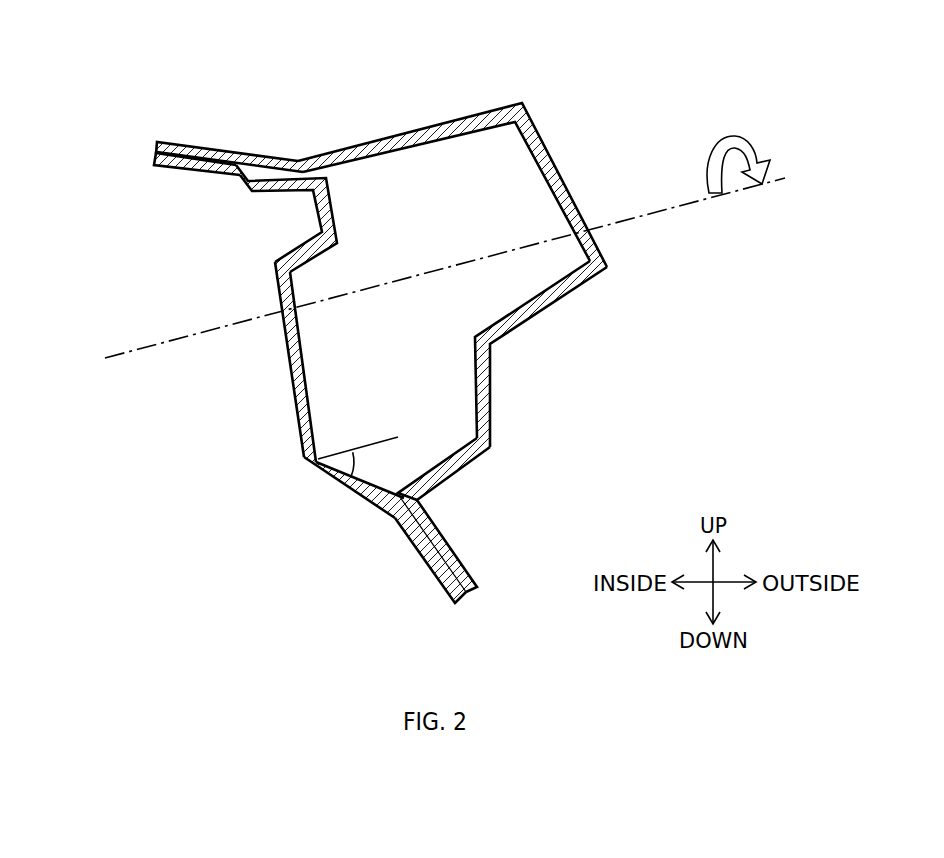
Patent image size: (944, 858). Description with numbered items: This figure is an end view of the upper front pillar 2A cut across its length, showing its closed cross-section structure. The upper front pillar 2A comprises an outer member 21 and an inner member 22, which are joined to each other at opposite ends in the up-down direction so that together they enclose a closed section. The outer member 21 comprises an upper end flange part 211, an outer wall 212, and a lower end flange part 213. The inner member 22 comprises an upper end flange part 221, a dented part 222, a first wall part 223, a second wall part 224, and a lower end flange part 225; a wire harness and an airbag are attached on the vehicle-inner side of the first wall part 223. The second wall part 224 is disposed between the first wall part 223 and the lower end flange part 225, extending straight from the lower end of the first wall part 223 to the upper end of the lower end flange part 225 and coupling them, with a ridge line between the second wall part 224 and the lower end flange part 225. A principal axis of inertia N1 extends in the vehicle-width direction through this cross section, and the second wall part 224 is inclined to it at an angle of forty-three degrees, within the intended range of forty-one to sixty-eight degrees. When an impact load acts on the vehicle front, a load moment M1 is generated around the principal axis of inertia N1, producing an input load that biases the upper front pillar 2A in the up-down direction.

The upper front pillar 2A is at (453, 90).
The outer member 21 is at (552, 139).
The upper end flange part 211 is at (200, 143).
The outer wall 212 is at (608, 266).
The lower end flange part 213 is at (464, 566).
The inner member 22 is at (285, 384).
The upper end flange part 221 is at (184, 170).
The dented part 222 is at (317, 211).
The first wall part 223 is at (296, 425).
The second wall part 224 is at (345, 486).
The lower end flange part 225 is at (428, 564).
The principal axis of inertia N1 is at (427, 276).
The load moment M1 is at (746, 158).